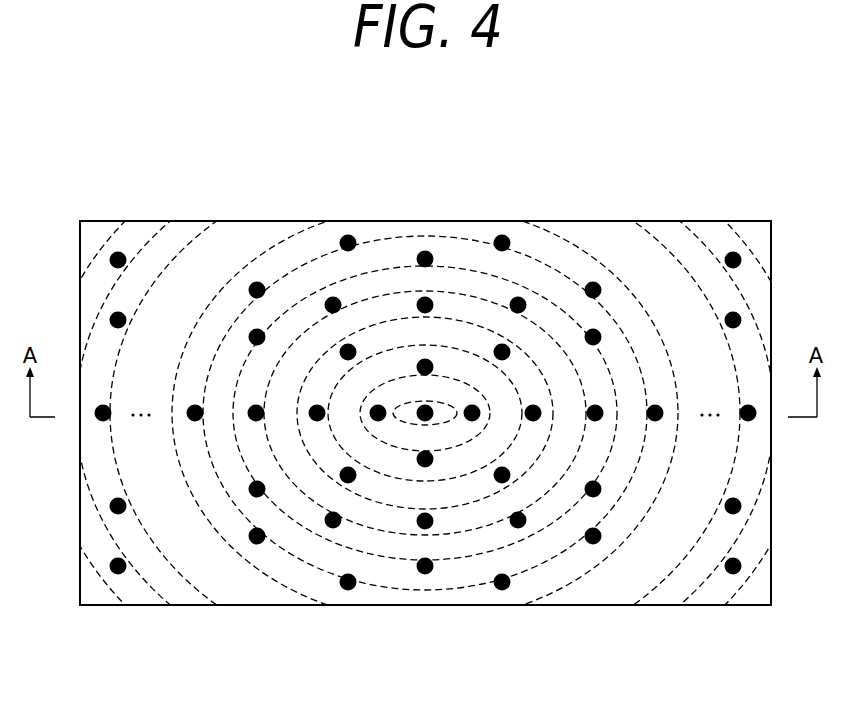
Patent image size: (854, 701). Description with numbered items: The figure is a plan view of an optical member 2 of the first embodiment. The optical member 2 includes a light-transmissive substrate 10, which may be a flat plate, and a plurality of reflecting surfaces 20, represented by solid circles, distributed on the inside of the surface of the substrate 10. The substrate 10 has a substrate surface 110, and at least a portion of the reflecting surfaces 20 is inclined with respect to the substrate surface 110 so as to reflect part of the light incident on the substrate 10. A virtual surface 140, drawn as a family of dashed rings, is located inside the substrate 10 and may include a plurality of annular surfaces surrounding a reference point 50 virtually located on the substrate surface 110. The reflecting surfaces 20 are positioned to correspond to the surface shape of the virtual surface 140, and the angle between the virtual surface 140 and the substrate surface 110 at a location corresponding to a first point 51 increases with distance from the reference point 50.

The optical member 2 is at (566, 131).
The substrate 10 is at (262, 220).
The substrate surface 110 is at (201, 268).
The reference point 50 is at (423, 405).
The first point 51 is at (598, 405).
The reflecting surfaces 20 is at (425, 570).
The virtual surface 140 is at (580, 577).